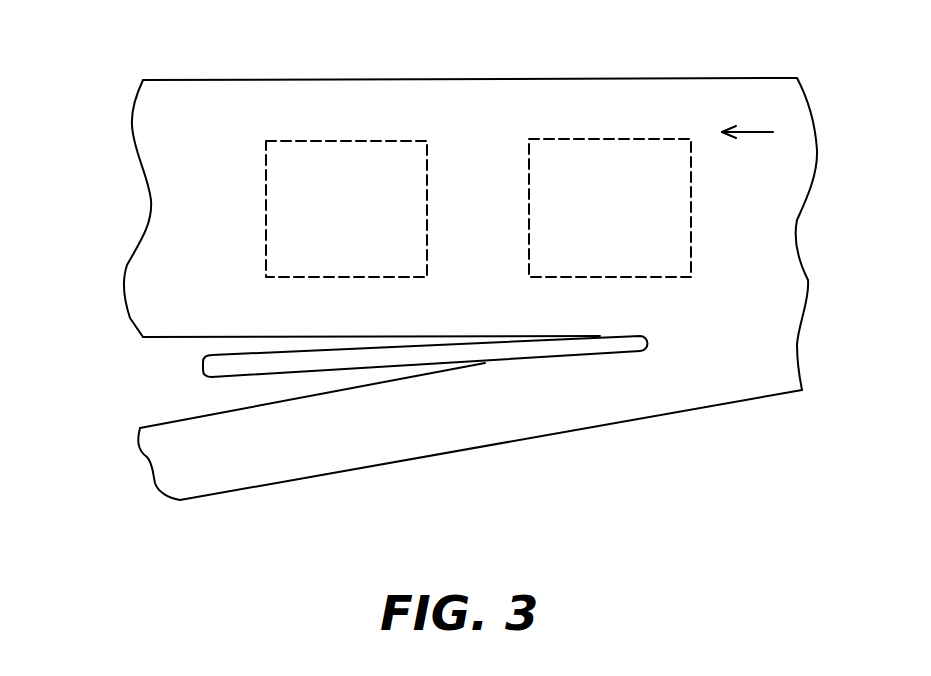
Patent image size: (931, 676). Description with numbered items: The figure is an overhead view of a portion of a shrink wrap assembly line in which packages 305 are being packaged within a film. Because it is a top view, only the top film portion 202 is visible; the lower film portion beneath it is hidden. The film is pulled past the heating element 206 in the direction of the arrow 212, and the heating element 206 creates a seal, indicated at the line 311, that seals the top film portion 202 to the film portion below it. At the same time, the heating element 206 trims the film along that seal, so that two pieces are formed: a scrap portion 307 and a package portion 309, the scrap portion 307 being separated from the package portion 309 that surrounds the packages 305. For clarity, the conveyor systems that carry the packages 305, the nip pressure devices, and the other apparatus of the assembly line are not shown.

The top film portion 202 is at (699, 409).
The heating element 206 is at (245, 377).
The arrow 212 is at (745, 129).
The packages 305 is at (393, 141).
The scrap portion 307 is at (202, 500).
The package portion 309 is at (243, 80).
The line 311 is at (168, 337).